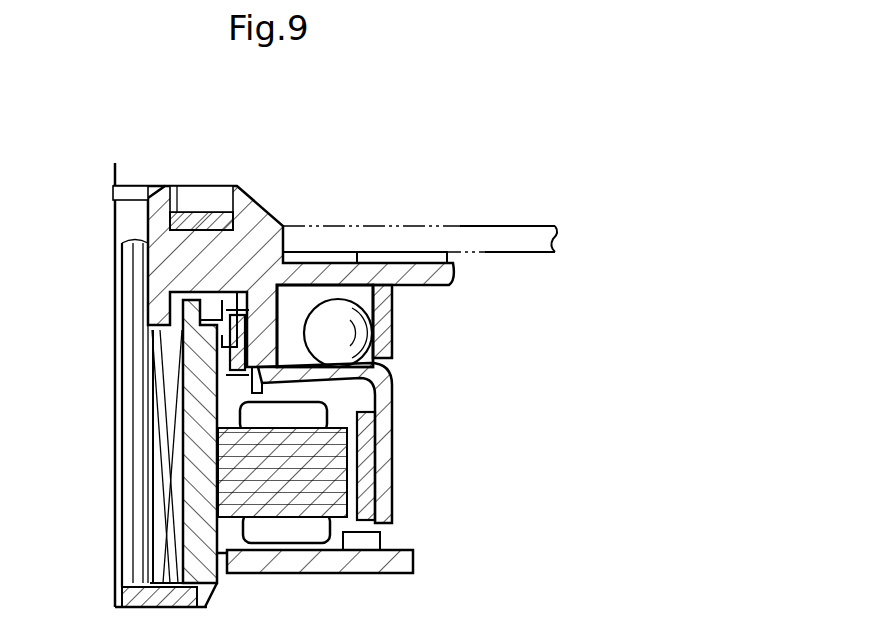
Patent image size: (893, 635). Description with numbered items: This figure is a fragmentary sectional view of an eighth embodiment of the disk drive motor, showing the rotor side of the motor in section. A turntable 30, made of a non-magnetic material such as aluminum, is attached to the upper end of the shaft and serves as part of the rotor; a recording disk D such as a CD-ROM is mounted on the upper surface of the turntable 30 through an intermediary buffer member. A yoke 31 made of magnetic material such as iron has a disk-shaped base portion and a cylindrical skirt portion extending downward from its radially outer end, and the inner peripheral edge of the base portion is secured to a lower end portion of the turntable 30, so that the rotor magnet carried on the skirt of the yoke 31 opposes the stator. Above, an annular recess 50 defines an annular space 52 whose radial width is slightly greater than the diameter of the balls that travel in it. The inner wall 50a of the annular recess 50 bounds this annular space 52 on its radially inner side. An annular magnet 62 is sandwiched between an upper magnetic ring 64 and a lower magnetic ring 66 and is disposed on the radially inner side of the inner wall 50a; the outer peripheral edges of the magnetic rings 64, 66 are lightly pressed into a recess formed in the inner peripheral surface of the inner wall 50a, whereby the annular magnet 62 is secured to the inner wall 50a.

The turntable 30 is at (267, 210).
The upper magnetic ring 64 is at (310, 297).
The annular space 52 is at (337, 272).
The annular recess 50 is at (367, 282).
The recording disk D is at (513, 227).
The inner wall 50a is at (265, 340).
The annular magnet 62 is at (250, 345).
The lower magnetic ring 66 is at (240, 380).
The yoke 31 is at (397, 489).